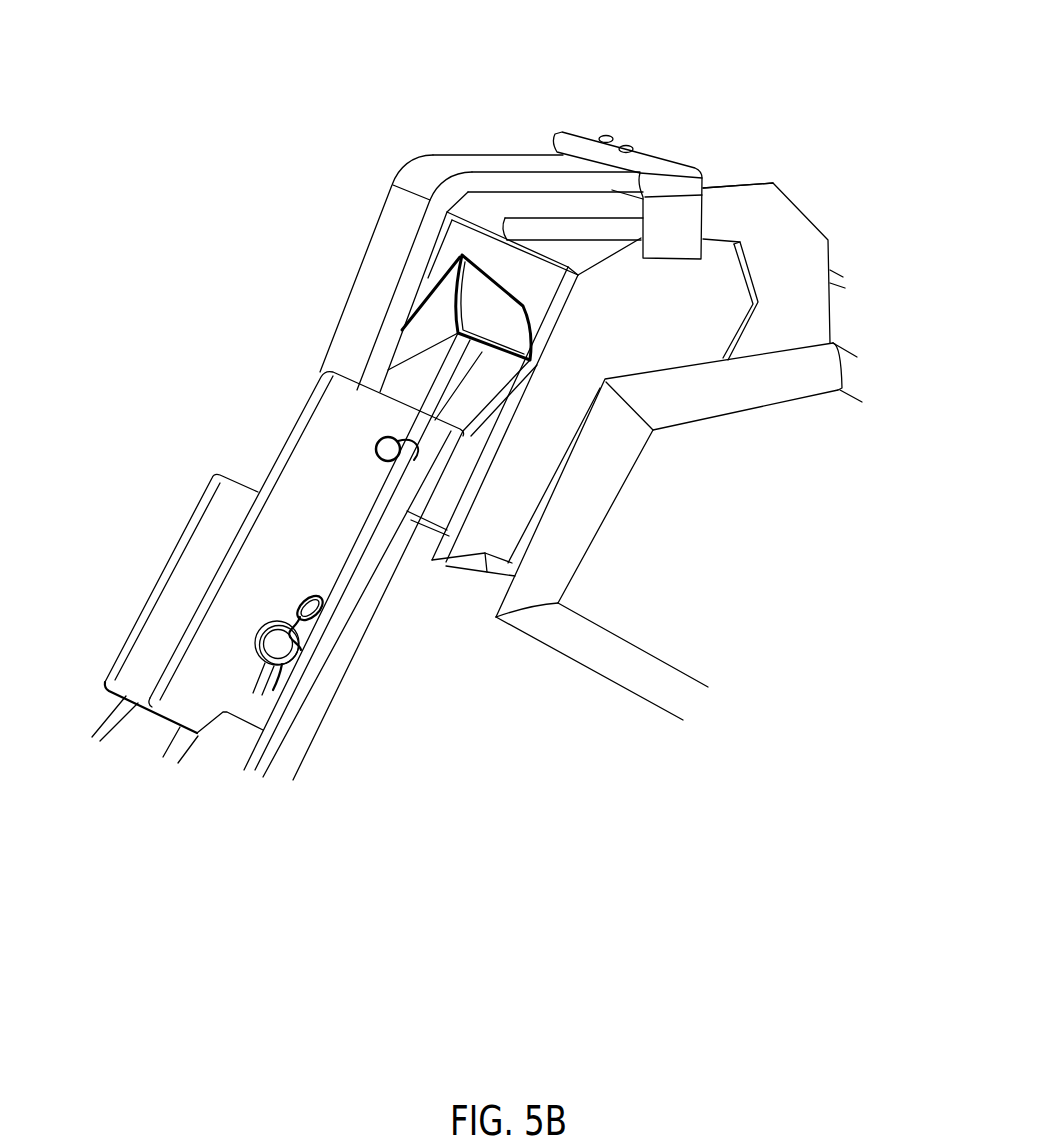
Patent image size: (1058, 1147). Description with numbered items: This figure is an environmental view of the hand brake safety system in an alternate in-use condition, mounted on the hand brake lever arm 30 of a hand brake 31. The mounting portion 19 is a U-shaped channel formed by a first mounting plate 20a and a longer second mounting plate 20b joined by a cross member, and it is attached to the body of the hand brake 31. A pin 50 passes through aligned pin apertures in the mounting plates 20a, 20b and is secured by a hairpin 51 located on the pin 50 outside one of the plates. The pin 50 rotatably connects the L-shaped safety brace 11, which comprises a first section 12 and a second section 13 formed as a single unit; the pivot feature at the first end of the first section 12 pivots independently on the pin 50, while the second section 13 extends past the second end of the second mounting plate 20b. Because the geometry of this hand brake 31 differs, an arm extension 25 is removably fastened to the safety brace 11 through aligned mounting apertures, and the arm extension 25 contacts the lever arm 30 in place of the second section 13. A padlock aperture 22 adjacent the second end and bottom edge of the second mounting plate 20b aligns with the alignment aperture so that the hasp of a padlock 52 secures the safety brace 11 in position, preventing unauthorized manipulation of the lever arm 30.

The safety brace 11 is at (372, 150).
The first section 12 is at (358, 267).
The second section 13 is at (527, 154).
The mounting portion 19 is at (257, 478).
The first mounting plate 20a is at (112, 664).
The second mounting plate 20b is at (332, 533).
The padlock aperture 22 is at (410, 465).
The arm extension 25 is at (661, 152).
The hand brake lever arm 30 is at (780, 220).
The hand brake 31 is at (762, 436).
The pin 50 is at (287, 643).
The hairpin 51 is at (300, 600).
The padlock 52 is at (470, 272).